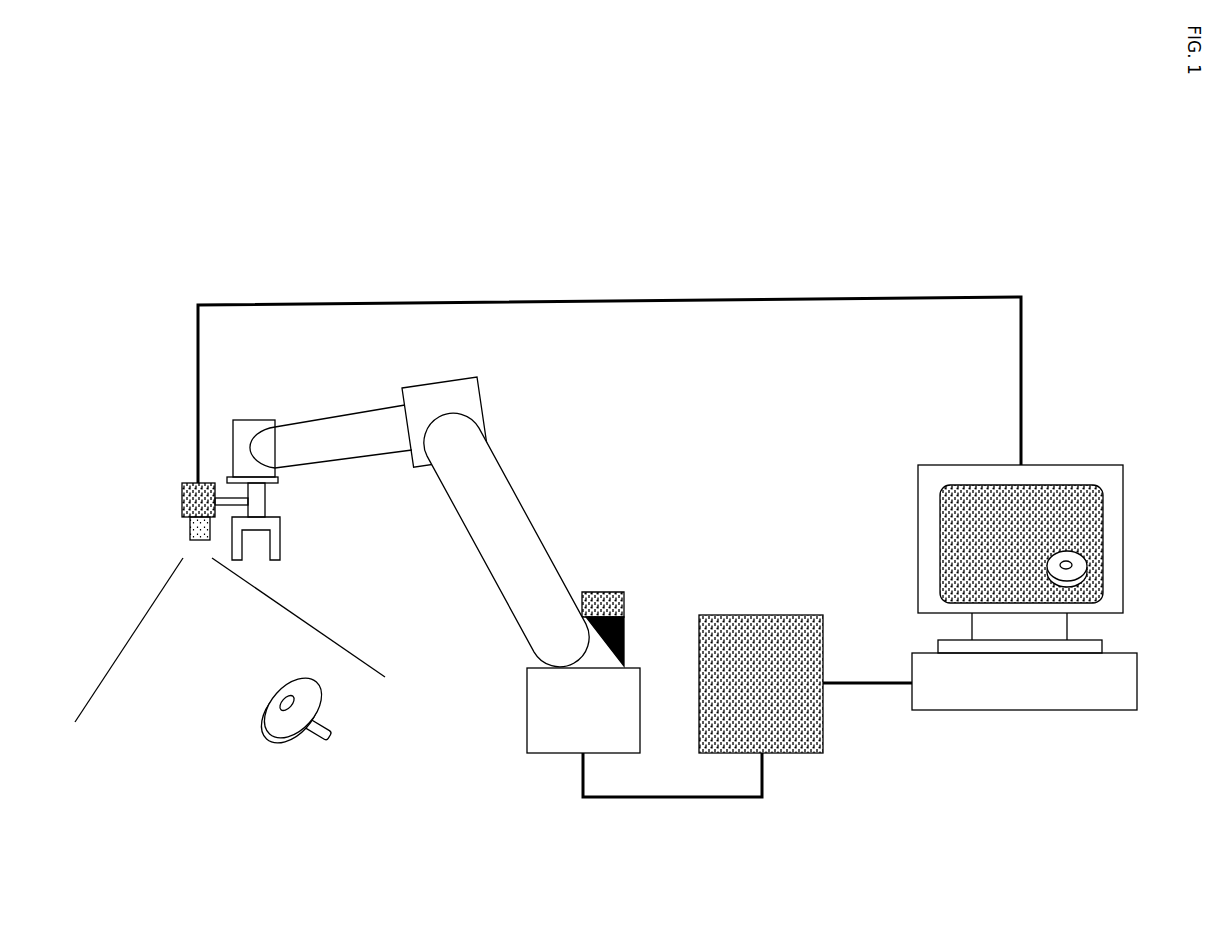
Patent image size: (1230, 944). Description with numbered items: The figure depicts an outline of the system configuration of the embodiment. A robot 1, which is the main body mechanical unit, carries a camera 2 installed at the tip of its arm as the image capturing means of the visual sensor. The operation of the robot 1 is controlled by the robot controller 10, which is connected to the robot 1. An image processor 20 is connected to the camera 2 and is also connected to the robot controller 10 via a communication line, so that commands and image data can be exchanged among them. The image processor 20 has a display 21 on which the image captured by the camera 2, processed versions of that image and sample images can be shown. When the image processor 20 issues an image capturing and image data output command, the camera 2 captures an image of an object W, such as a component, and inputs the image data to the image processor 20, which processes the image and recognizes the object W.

The robot 1 is at (538, 468).
The camera 2 is at (153, 485).
The robot controller 10 is at (752, 600).
The image processor 20 is at (1026, 742).
The display 21 is at (887, 467).
The object W is at (265, 772).